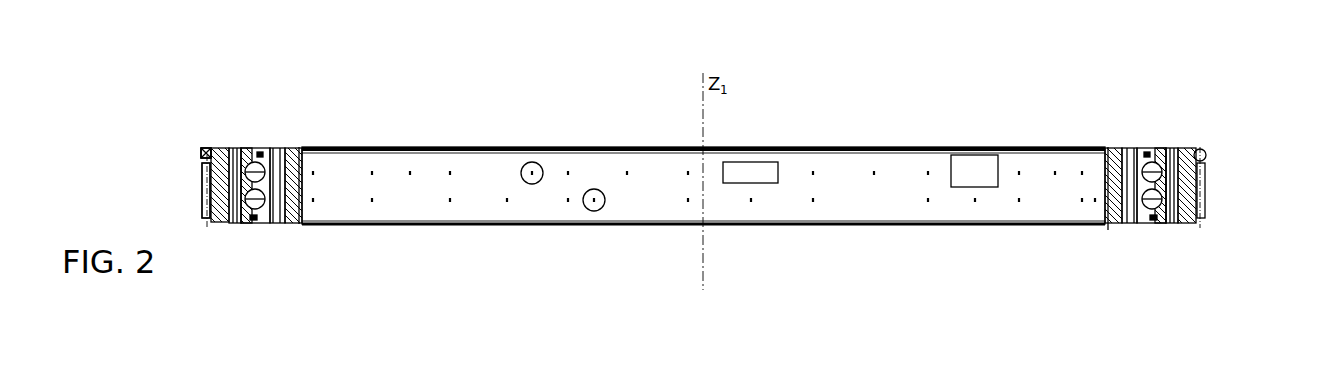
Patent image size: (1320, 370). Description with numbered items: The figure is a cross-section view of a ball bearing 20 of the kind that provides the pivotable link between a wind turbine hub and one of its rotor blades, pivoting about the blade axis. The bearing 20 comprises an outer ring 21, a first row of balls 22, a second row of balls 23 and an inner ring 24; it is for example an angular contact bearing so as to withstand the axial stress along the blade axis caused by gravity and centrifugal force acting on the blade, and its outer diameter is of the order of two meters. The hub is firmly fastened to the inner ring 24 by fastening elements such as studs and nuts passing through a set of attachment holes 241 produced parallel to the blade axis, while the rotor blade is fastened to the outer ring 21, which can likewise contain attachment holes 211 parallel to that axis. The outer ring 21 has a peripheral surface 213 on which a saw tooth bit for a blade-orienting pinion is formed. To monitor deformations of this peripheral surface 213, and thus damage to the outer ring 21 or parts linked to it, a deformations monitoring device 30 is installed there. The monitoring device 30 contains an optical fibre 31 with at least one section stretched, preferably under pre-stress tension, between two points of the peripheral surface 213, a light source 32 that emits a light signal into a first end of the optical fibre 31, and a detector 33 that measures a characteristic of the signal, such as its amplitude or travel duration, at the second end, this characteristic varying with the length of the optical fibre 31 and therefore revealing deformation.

The ball bearing 20 is at (453, 110).
The outer ring 21 is at (222, 222).
The attachment holes 211 is at (1125, 223).
The peripheral surface 213 is at (208, 162).
The first row of balls 22 is at (1141, 148).
The second row of balls 23 is at (1153, 218).
The inner ring 24 is at (290, 228).
The attachment holes 241 is at (1178, 146).
The deformations monitoring device 30 is at (220, 116).
The optical fibre 31 is at (1207, 150).
The light source 32 is at (205, 148).
The detector 33 is at (206, 153).